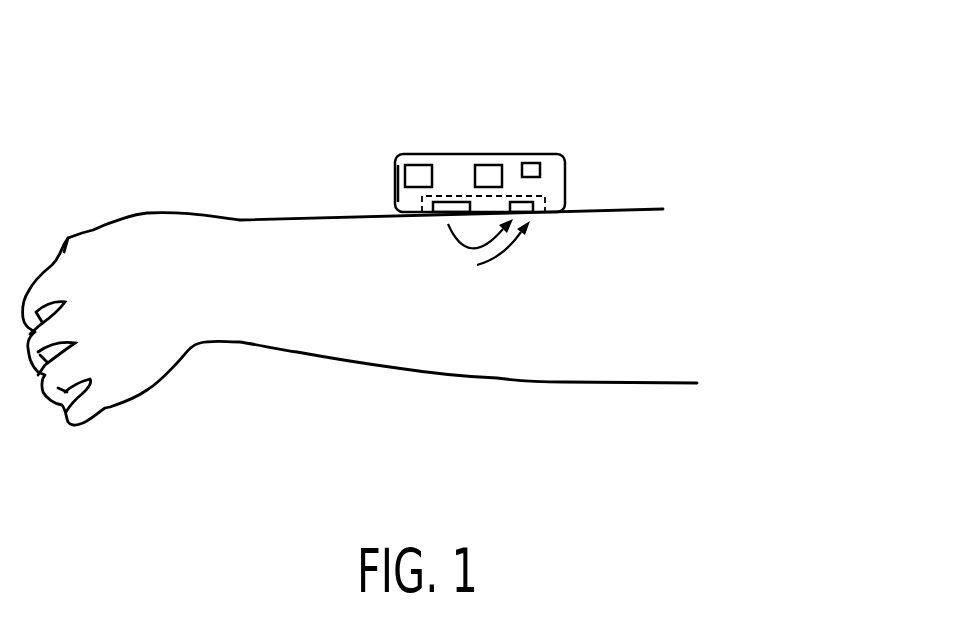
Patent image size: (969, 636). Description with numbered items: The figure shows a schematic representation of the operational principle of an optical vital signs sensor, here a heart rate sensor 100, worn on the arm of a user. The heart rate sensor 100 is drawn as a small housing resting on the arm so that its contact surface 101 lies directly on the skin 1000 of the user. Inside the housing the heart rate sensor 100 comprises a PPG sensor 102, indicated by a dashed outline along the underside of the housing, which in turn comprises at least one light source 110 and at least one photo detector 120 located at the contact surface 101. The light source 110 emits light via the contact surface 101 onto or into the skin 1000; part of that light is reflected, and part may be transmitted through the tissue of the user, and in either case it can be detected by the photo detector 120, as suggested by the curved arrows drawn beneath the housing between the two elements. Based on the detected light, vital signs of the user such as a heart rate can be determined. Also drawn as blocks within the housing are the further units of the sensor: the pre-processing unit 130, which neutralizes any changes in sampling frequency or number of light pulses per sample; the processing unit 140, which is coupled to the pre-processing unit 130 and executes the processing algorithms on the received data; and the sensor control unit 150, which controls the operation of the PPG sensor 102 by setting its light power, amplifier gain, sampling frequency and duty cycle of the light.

The heart rate sensor 100 is at (565, 170).
The contact surface 101 is at (417, 210).
The PPG sensor 102 is at (540, 193).
The light source 110 is at (453, 202).
The photo detector 120 is at (523, 202).
The pre-processing unit 130 is at (490, 163).
The processing unit 140 is at (417, 163).
The sensor control unit 150 is at (532, 163).
The skin 1000 is at (560, 347).